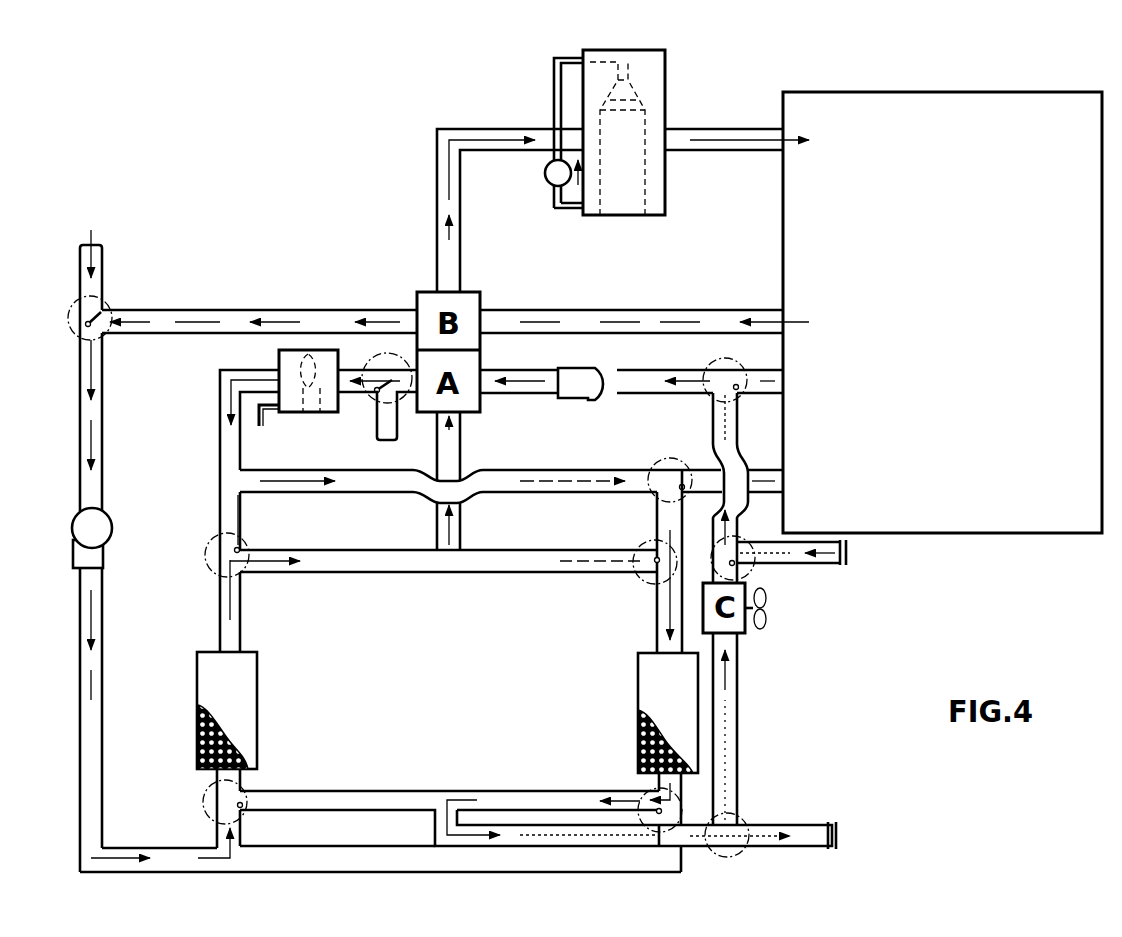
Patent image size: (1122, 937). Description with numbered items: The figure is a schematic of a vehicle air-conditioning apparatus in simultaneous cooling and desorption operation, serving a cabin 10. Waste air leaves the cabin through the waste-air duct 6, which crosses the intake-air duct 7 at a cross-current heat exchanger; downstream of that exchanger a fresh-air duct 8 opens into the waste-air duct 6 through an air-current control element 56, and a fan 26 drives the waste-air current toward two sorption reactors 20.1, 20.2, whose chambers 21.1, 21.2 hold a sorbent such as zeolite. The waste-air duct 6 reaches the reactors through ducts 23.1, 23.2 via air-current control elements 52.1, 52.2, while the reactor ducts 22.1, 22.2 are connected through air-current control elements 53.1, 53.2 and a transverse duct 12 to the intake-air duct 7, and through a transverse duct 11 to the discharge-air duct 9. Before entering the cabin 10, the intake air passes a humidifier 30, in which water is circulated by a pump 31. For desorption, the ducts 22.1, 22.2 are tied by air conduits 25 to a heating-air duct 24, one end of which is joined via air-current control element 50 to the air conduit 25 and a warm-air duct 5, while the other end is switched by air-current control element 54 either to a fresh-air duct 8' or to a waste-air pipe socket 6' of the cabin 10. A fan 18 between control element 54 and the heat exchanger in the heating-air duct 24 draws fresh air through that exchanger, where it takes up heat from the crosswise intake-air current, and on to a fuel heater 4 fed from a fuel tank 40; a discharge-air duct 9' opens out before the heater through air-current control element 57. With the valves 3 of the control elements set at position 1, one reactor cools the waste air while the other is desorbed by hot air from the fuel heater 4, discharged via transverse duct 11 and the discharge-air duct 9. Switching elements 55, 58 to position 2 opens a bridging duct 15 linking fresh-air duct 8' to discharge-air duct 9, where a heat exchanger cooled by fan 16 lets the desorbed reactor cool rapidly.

The position "1" of air-current control element 1 is at (471, 580).
The position "2" of air-current control element 2 is at (478, 633).
The valve 3 is at (76, 303).
The heating device / fuel heater 4 is at (279, 358).
The warm-air duct 5 is at (760, 470).
The waste-air duct 6 is at (455, 475).
The waste-air pipe socket 6' is at (764, 357).
The intake-air duct 7 is at (743, 129).
The fresh-air duct 8 is at (108, 268).
The fresh-air duct 8' is at (798, 578).
The discharge-air duct 9 is at (458, 852).
The discharge-air duct 9' is at (370, 432).
The cabin 10 is at (946, 326).
The transverse duct 11 is at (358, 790).
The transverse duct 12 is at (386, 572).
The bridging duct 15 is at (737, 684).
The fan 16 is at (764, 618).
The fan 18 is at (596, 400).
The sorption reactor 20.1 is at (257, 692).
The sorption reactor 20.2 is at (638, 680).
The chamber 21.1 is at (241, 737).
The chamber 21.2 is at (650, 736).
The duct 22.1 is at (242, 624).
The duct 22.2 is at (657, 626).
The duct 23.1 is at (222, 772).
The duct 23.2 is at (690, 776).
The heating-air duct 24 is at (500, 468).
The air conduit 25 is at (243, 524).
The fan 26 is at (109, 515).
The humidifier 30 is at (662, 70).
The pump 31 is at (547, 180).
The fuel tank 40 is at (264, 427).
The air-current control element 50 is at (667, 462).
The air-current control element 52.1 is at (204, 806).
The air-current control element 52.2 is at (690, 799).
The air-current control element 53.1 is at (211, 575).
The air-current control element 53.2 is at (642, 581).
The air-current control element 54 is at (708, 368).
The air-current control element 55 is at (749, 822).
The air-current control element 56 is at (110, 300).
The air-current control element 57 is at (364, 394).
The air-current control element 58 is at (752, 566).